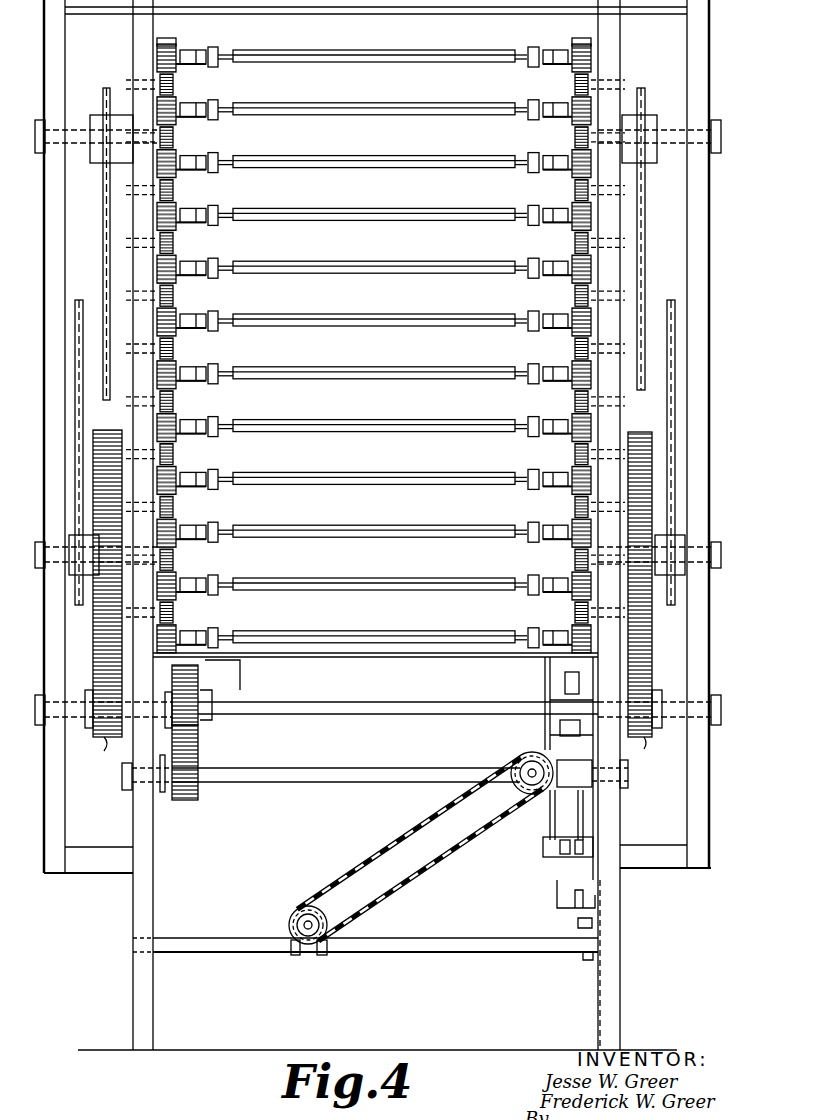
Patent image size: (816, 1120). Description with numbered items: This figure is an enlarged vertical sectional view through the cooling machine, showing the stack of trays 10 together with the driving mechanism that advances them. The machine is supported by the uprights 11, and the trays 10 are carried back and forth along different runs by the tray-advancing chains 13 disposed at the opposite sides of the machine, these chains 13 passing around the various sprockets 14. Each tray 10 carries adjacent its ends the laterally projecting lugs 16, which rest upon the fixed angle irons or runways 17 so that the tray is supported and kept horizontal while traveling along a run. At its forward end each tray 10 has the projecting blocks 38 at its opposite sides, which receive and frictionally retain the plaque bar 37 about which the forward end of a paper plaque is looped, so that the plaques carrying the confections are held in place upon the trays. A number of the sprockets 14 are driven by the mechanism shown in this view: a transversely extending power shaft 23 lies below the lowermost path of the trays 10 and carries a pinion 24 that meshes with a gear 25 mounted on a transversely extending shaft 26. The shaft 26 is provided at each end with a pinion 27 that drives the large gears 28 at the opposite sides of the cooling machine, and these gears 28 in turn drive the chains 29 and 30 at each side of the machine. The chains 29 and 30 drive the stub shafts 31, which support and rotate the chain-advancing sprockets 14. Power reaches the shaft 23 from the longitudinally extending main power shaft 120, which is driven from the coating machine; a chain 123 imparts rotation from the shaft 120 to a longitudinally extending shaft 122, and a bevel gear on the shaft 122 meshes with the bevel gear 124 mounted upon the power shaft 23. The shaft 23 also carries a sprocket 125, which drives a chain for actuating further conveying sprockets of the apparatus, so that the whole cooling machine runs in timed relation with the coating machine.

The tray 10 is at (380, 227).
The upright 11 is at (133, 928).
The chain 13 is at (166, 56).
The sprocket 14 is at (176, 135).
The lug 16 is at (195, 70).
The runway 17 is at (186, 292).
The power shaft 23 is at (348, 783).
The pinion 24 is at (192, 800).
The gear 25 is at (198, 676).
The shaft 26 is at (326, 716).
The pinion 27 is at (543, 845).
The large gear 28 is at (93, 640).
The chain 29 is at (75, 456).
The chain 30 is at (103, 220).
The stub shaft 31 is at (82, 141).
The plaque bar 37 is at (355, 44).
The projecting block 38 is at (216, 50).
The main power shaft 120 is at (299, 908).
The shaft 122 is at (518, 756).
The chain 123 is at (420, 874).
The bevel gear 124 is at (562, 790).
The sprocket 125 is at (162, 796).